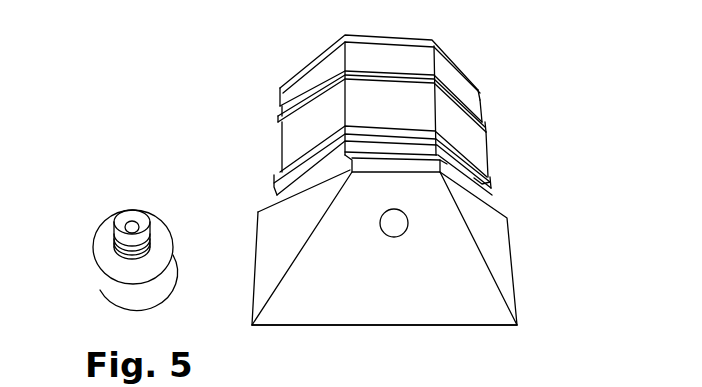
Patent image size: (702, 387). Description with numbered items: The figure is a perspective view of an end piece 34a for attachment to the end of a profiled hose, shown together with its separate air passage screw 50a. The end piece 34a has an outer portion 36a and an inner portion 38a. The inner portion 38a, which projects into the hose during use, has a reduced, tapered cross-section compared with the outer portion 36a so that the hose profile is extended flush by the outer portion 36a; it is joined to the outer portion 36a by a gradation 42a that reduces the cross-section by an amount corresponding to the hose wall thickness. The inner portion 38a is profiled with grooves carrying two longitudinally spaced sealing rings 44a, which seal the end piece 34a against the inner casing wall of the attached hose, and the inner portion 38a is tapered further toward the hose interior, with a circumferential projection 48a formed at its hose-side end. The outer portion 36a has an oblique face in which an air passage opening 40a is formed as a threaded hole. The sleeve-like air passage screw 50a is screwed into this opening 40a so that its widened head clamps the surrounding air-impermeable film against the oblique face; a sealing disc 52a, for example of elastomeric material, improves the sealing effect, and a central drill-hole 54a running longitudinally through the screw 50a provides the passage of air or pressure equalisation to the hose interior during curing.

The end piece 34a is at (212, 27).
The outer portion 36a is at (495, 254).
The inner portion 38a is at (470, 141).
The air passage opening 40a is at (396, 229).
The gradation 42a is at (478, 186).
The sealing rings 44a is at (372, 79).
The projection 48a is at (445, 53).
The air passage screw 50a is at (108, 266).
The sealing disc 52a is at (162, 238).
The central drill-hole 54a is at (126, 225).